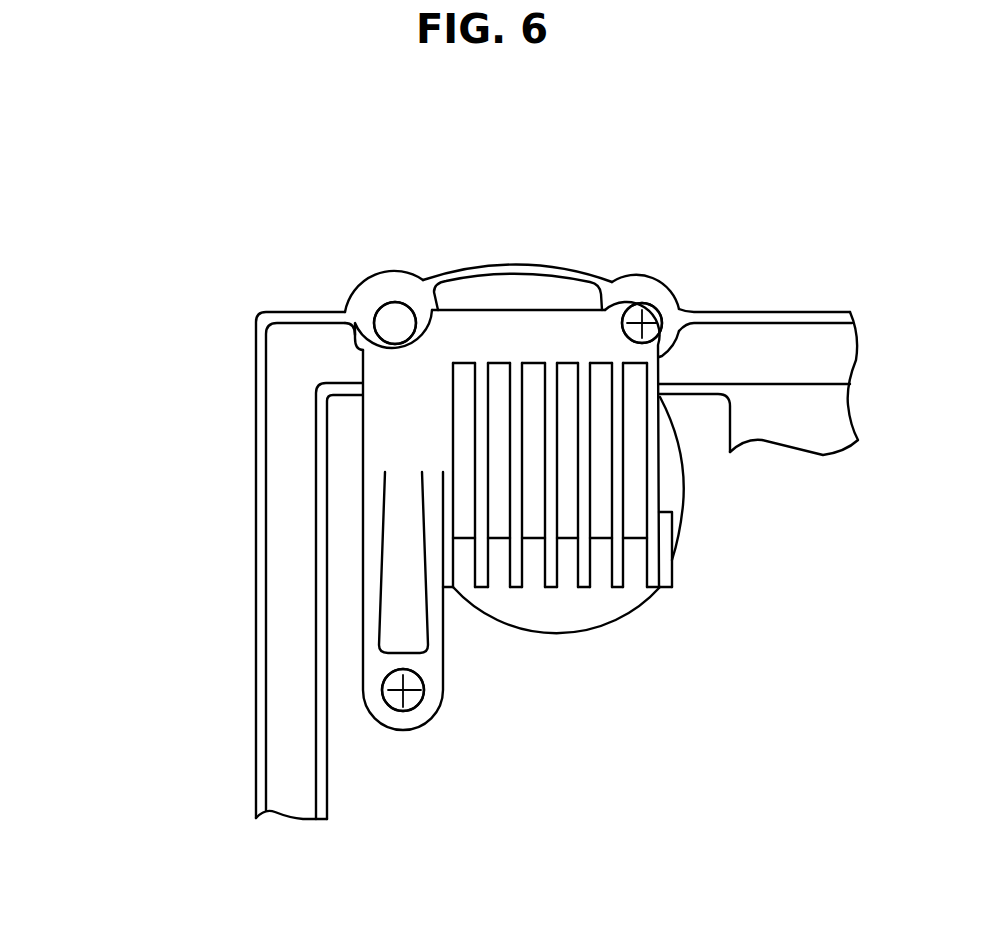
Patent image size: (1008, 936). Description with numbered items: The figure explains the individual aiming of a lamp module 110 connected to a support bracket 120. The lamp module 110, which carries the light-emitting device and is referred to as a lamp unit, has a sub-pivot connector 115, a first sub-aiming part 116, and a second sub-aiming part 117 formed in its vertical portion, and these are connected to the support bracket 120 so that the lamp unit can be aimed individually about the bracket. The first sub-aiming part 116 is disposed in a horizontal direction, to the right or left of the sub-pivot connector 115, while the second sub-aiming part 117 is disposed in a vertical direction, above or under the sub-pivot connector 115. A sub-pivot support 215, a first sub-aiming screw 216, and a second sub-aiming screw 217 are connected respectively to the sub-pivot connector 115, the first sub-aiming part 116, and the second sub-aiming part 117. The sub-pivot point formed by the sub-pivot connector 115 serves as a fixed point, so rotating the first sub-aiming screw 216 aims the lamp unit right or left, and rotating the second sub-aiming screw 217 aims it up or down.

The lamp module 110 is at (410, 428).
The sub-pivot connector 115 is at (390, 315).
The first sub-aiming part 116 is at (636, 310).
The second sub-aiming part 117 is at (417, 707).
The support bracket 120 is at (278, 610).
The sub-pivot support 215 is at (400, 312).
The first sub-aiming screw 216 is at (647, 315).
The second sub-aiming screw 217 is at (413, 682).